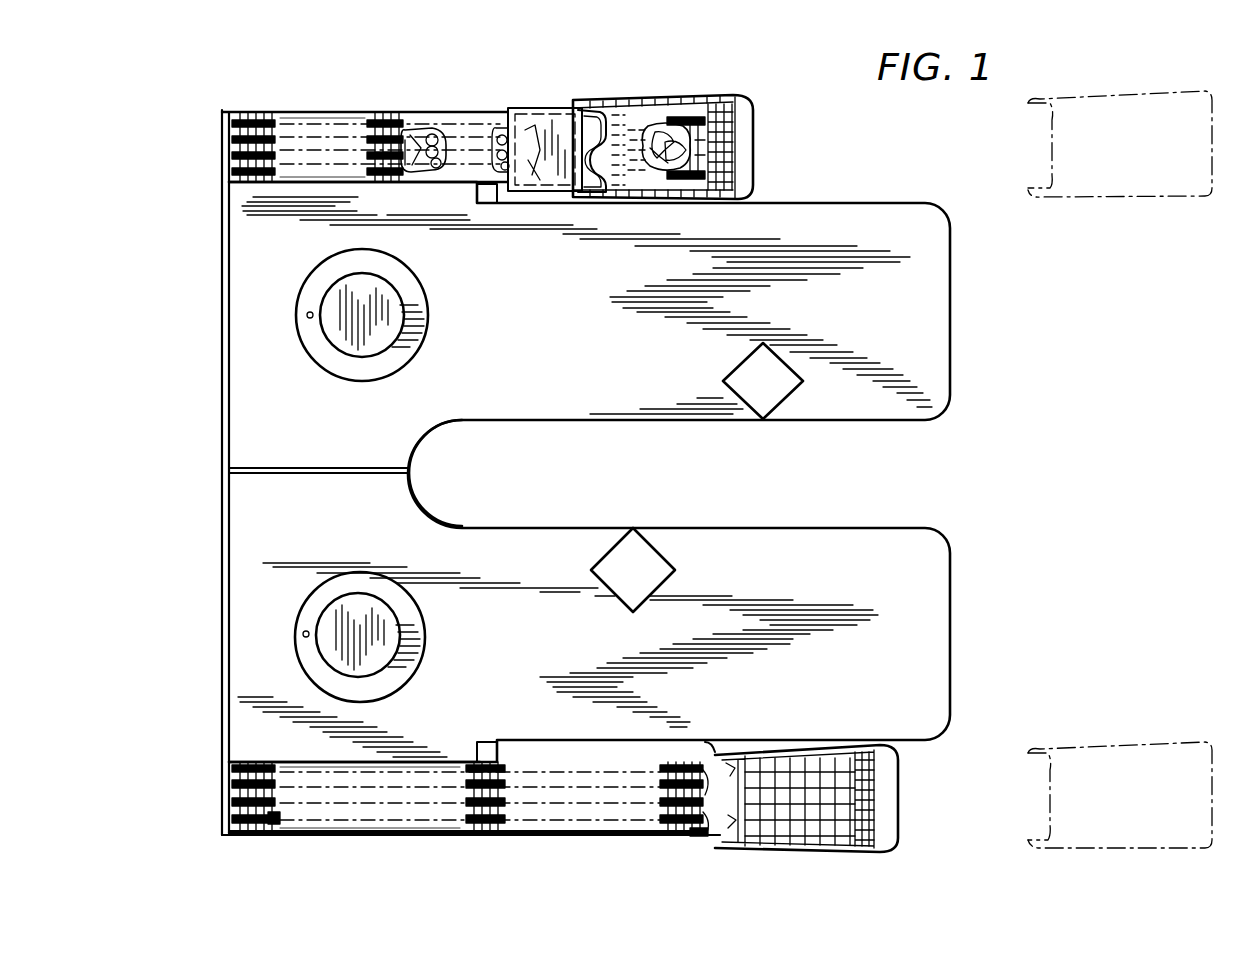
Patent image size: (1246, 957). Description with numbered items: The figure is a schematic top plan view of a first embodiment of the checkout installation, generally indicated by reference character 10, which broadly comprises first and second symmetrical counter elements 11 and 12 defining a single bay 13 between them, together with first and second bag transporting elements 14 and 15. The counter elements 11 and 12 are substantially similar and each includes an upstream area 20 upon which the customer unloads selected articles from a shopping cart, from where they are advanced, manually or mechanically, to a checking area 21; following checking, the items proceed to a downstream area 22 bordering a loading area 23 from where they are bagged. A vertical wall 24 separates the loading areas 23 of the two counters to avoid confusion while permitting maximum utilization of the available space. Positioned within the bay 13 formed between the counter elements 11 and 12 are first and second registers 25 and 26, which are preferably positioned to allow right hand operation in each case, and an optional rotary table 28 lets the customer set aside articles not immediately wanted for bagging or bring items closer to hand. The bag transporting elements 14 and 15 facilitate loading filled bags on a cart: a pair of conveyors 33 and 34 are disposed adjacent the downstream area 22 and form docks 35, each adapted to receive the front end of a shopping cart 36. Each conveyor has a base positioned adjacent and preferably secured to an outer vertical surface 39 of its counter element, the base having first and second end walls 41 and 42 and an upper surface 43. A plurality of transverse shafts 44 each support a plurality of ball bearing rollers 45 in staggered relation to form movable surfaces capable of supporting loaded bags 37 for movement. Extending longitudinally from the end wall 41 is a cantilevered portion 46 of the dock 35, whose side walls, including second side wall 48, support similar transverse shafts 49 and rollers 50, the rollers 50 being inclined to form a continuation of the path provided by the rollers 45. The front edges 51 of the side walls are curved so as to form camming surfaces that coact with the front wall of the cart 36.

The embodiment 10 is at (440, 461).
The first counter element 11 is at (222, 830).
The second counter element 12 is at (222, 132).
The bay 13 is at (456, 486).
The first bag transporting element 14 is at (262, 115).
The second bag transporting element 15 is at (470, 125).
The upstream area 20 is at (920, 332).
The checking area 21 is at (665, 348).
The downstream area 22 is at (494, 341).
The loading area 23 is at (400, 226).
The vertical wall 24 is at (300, 468).
The first register 25 is at (788, 398).
The second register 26 is at (680, 578).
The rotary table 28 is at (405, 345).
The conveyor 33 is at (366, 822).
The conveyor 34 is at (332, 120).
The dock 35 is at (550, 110).
The shopping cart 36 is at (694, 102).
The loaded bag 37 is at (428, 128).
The outer vertical surface 39 is at (715, 748).
The first end wall 41 is at (487, 742).
The second end wall 42 is at (229, 776).
The upper surface 43 is at (342, 811).
The transverse shaft 44 is at (275, 818).
The ball bearing roller 45 is at (270, 765).
The cantilevered portion 46 is at (488, 205).
The second side wall 48 is at (620, 762).
The transverse shaft 49 is at (662, 764).
The roller 50 is at (702, 836).
The front edge 51 is at (706, 778).